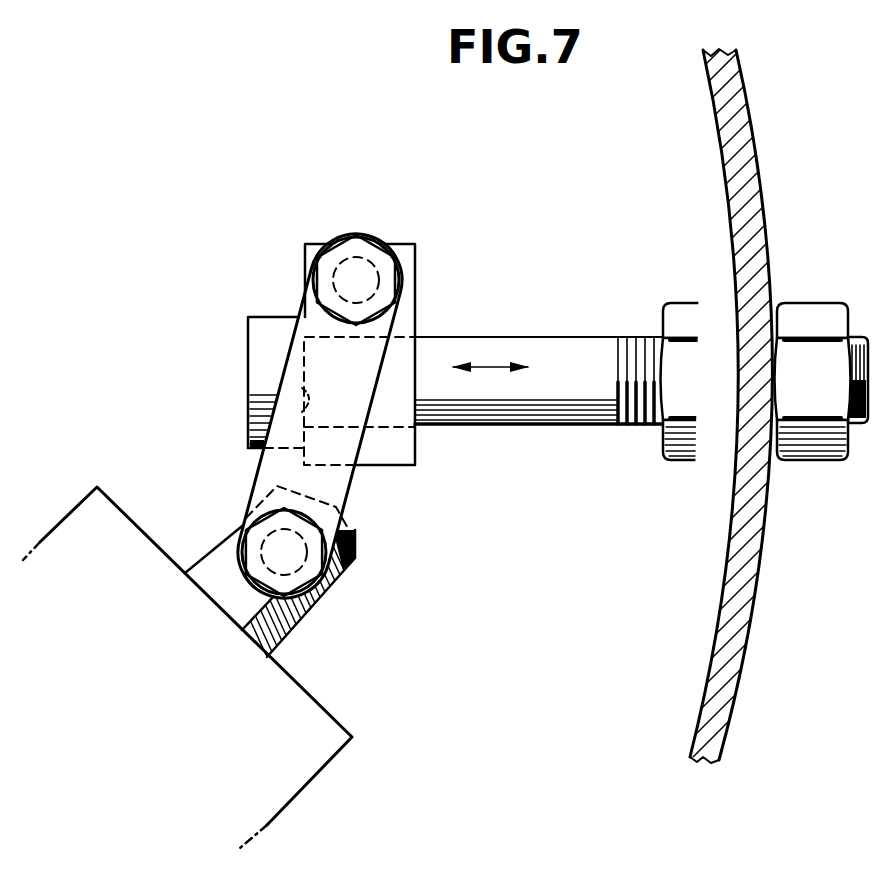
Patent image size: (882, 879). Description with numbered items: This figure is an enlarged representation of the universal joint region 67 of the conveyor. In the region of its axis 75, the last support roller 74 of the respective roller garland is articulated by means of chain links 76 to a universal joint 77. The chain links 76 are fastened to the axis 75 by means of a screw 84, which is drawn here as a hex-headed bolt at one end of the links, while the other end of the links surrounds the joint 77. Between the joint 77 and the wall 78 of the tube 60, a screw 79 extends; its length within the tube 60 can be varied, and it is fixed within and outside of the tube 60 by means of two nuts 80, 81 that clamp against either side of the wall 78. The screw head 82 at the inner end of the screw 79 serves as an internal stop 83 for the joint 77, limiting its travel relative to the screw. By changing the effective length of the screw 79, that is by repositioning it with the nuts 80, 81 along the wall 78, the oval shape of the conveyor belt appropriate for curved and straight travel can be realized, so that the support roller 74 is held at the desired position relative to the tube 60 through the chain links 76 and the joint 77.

The universal joint region 67 is at (231, 208).
The last support roller 74 is at (305, 735).
The axis 75 is at (248, 608).
The chain links 76 is at (282, 470).
The universal joint 77 is at (409, 326).
The wall 78 is at (720, 602).
The screw 79 is at (545, 355).
The nut 80 is at (696, 318).
The nut 81 is at (806, 318).
The screw head 82 is at (270, 325).
The internal stop 83 is at (302, 404).
The screw 84 is at (380, 265).
The tube 60 is at (748, 515).